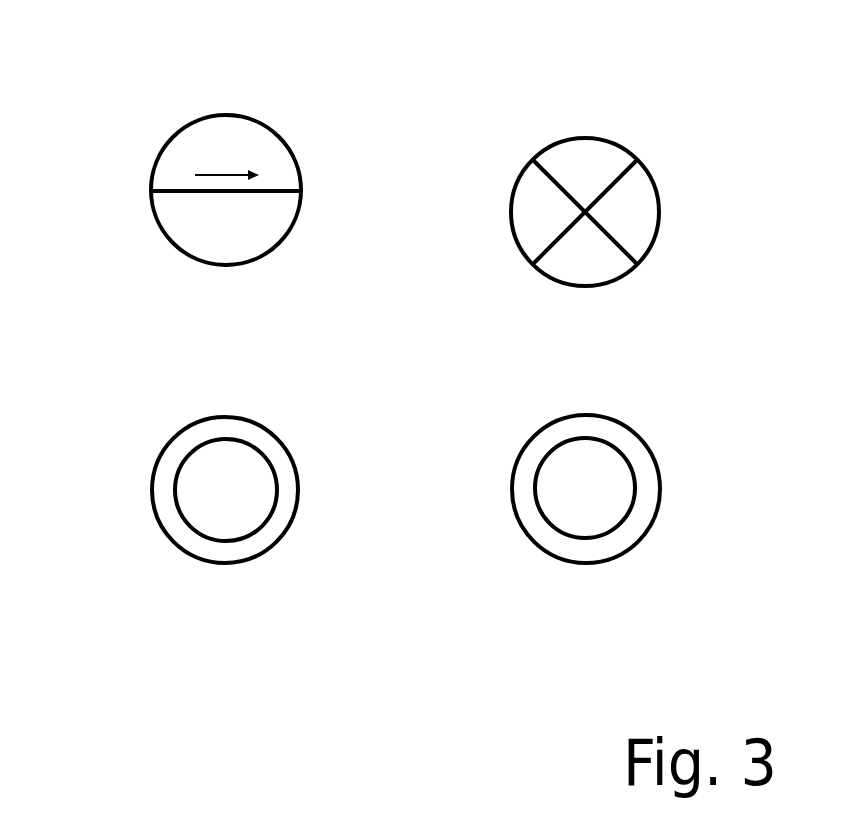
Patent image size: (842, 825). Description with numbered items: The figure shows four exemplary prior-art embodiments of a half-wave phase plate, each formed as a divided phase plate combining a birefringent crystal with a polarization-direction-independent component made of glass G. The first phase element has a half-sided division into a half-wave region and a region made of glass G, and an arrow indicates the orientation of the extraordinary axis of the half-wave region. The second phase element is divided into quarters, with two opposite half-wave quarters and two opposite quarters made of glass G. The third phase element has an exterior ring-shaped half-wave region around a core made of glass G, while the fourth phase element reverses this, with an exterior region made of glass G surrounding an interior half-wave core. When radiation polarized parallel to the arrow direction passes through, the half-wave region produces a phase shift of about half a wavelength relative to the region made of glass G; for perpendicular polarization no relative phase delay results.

The region made of glass G is at (197, 215).